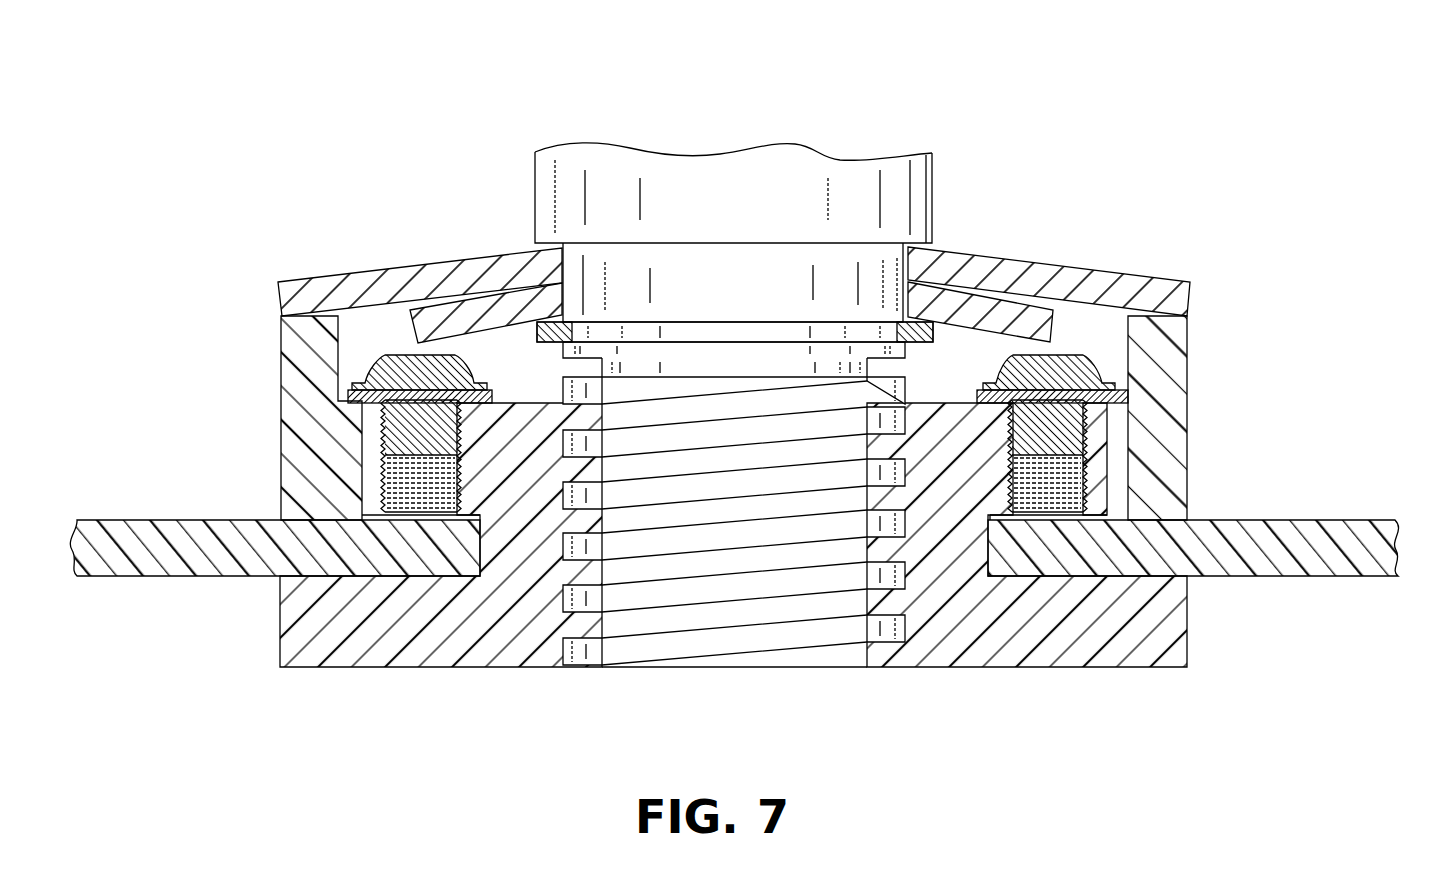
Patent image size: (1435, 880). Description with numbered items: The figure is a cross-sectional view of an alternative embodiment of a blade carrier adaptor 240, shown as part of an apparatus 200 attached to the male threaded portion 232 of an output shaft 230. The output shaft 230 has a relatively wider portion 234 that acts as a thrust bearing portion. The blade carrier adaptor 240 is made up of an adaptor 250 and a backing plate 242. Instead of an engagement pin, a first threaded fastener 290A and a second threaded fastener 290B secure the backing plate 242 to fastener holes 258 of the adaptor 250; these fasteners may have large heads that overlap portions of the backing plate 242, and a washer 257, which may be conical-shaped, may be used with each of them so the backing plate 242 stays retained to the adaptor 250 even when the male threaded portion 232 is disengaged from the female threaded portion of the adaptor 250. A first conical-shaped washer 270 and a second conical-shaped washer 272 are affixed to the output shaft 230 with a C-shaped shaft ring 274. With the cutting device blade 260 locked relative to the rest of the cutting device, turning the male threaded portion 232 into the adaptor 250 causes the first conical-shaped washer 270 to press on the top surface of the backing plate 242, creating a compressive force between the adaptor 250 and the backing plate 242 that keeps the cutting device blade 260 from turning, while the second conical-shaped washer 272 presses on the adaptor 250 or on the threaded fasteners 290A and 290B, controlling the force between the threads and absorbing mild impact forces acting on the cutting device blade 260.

The apparatus 200 is at (315, 126).
The output shaft 230 is at (563, 204).
The male threaded portion 232 is at (777, 637).
The relatively wider portion 234 is at (905, 193).
The blade carrier adaptor 240 is at (281, 447).
The backing plate 242 is at (312, 510).
The adaptor 250 is at (338, 658).
The washer 257 is at (352, 402).
The fastener holes 258 is at (397, 495).
The cutting device blade 260 is at (1242, 520).
The first conical-shaped washer 270 is at (340, 287).
The second conical-shaped washer 272 is at (477, 312).
The C-shaped shaft ring 274 is at (933, 340).
The first threaded fastener 290A is at (378, 372).
The second threaded fastener 290B is at (1067, 368).